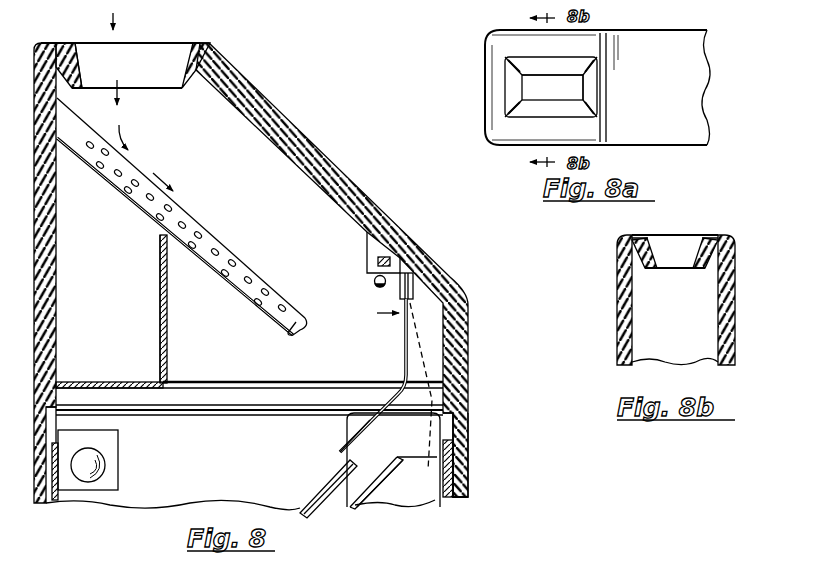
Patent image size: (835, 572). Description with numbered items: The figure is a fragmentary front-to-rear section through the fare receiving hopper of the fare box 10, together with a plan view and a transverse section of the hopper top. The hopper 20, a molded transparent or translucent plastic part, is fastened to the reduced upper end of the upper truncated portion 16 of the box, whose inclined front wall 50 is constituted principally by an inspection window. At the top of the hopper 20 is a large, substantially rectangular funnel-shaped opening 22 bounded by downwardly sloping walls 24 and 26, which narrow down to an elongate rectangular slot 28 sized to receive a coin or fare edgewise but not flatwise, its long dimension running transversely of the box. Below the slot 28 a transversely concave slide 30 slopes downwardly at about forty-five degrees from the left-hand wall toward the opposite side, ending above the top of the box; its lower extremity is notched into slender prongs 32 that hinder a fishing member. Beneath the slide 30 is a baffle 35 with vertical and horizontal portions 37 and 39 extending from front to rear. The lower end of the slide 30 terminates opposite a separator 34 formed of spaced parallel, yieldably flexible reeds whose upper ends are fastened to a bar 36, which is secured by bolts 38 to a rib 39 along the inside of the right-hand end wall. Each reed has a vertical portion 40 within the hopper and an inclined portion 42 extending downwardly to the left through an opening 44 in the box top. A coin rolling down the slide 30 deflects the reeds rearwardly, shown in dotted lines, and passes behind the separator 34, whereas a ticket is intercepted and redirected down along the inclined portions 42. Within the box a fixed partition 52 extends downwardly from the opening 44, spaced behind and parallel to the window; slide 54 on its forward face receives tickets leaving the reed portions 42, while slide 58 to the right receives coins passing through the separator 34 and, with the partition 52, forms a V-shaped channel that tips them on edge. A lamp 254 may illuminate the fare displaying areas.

In FIG. 8, the fare box 10 is at (617, 545).
In FIG. 8, the upper truncated portion 16 is at (470, 470).
In FIG. 8, the hopper 20 is at (340, 128).
In FIG. 8, the funnel-shaped opening 22 is at (195, 35).
In FIG. 8A, the funnel-shaped opening 22 is at (512, 125).
In FIG. 8B, the funnel-shaped opening 22 is at (678, 233).
In FIG. 8, the downwardly sloping wall 24 is at (76, 60).
In FIG. 8A, the downwardly sloping wall 24 is at (590, 83).
In FIG. 8B, the downwardly sloping wall 24 is at (690, 243).
In FIG. 8, the downwardly sloping wall 26 is at (160, 78).
In FIG. 8A, the downwardly sloping wall 26 is at (560, 67).
In FIG. 8B, the downwardly sloping wall 26 is at (657, 237).
In FIG. 8A, the slot 28 is at (530, 87).
In FIG. 8B, the slot 28 is at (674, 270).
In FIG. 8, the slide 30 is at (130, 197).
In FIG. 8, the prongs 32 is at (292, 323).
In FIG. 8, the separator 34 is at (392, 386).
In FIG. 8, the baffle 35 is at (160, 331).
In FIG. 8, the bar 36 is at (401, 270).
In FIG. 8, the vertical portion 37 is at (160, 272).
In FIG. 8, the bolts 38 is at (376, 285).
In FIG. 8, the rib 39 is at (107, 382).
In FIG. 8, the vertical portion 40 is at (404, 357).
In FIG. 8, the inclined portion 42 is at (348, 438).
In FIG. 8, the opening 44 is at (220, 423).
In FIG. 8, the front wall 50 is at (673, 570).
In FIG. 8, the fixed partition 52 is at (171, 485).
In FIG. 8, the slide 54 is at (322, 512).
In FIG. 8, the slide 58 is at (405, 500).
In FIG. 8, the lamp 254 is at (102, 466).